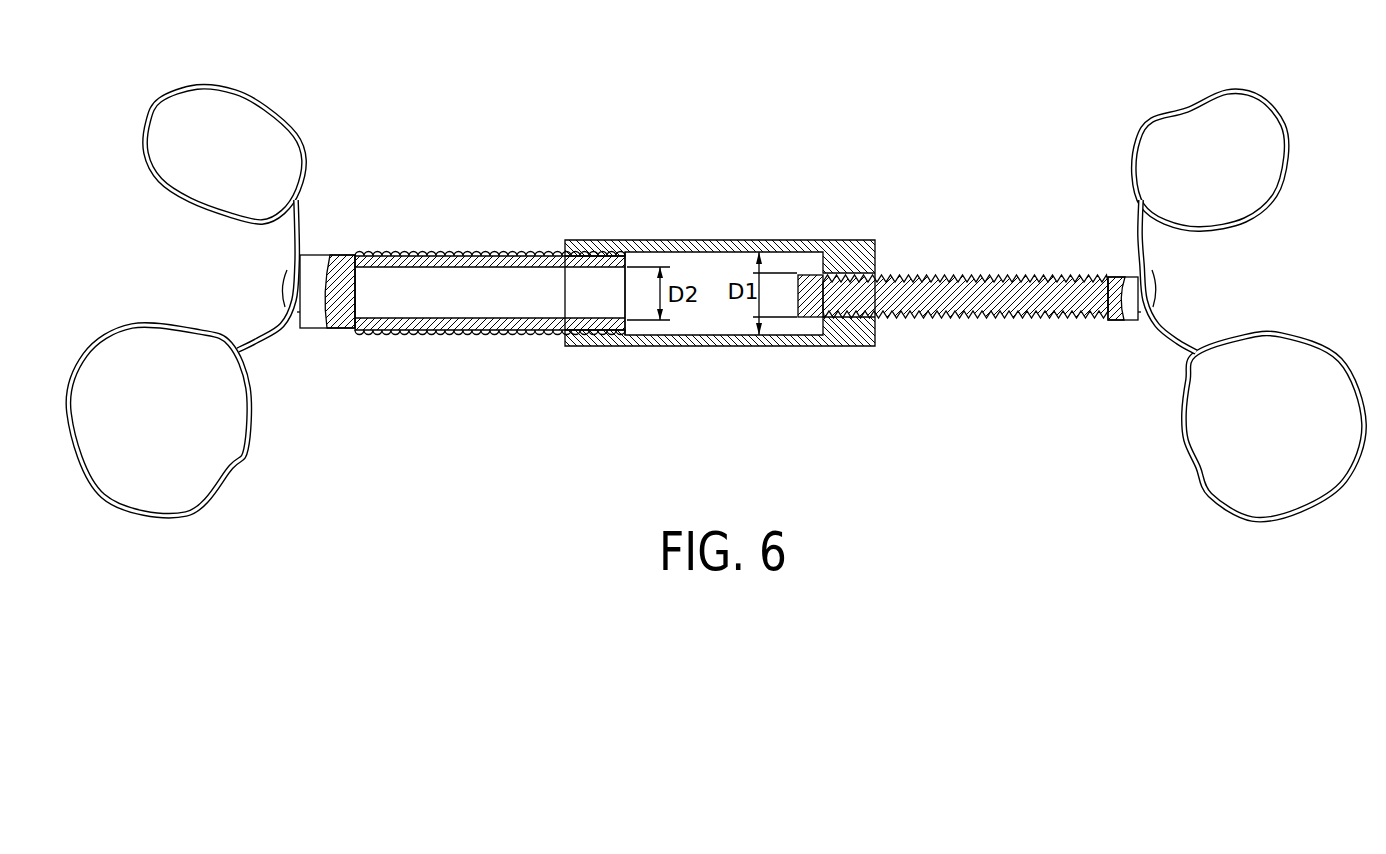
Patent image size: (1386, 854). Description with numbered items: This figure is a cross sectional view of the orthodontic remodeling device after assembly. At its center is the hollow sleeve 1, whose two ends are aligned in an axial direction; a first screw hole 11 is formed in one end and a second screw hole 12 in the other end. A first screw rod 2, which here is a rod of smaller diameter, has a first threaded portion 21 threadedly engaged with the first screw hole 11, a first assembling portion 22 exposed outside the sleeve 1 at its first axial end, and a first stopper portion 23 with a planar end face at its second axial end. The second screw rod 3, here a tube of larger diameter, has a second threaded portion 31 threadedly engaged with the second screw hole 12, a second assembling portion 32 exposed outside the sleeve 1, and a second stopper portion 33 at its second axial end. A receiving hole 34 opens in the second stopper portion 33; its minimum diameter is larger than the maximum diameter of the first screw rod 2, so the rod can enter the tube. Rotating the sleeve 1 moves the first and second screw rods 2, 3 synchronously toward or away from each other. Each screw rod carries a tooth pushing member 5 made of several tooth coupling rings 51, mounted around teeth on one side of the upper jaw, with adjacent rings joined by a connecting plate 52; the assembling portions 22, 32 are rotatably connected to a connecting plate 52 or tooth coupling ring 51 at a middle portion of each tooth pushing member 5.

The sleeve 1 is at (720, 258).
The first screw hole 11 is at (848, 268).
The second screw hole 12 is at (583, 243).
The first screw rod 2 is at (965, 291).
The first threaded portion 21 is at (936, 320).
The first assembling portion 22 is at (1122, 321).
The first stopper portion 23 is at (802, 320).
The second screw rod 3 is at (486, 272).
The second threaded portion 31 is at (428, 252).
The second assembling portion 32 is at (318, 256).
The second stopper portion 33 is at (628, 256).
The receiving hole 34 is at (615, 302).
The tooth pushing member 5 is at (716, 285).
The tooth coupling ring 51 is at (298, 130).
The connecting plate 52 is at (282, 340).